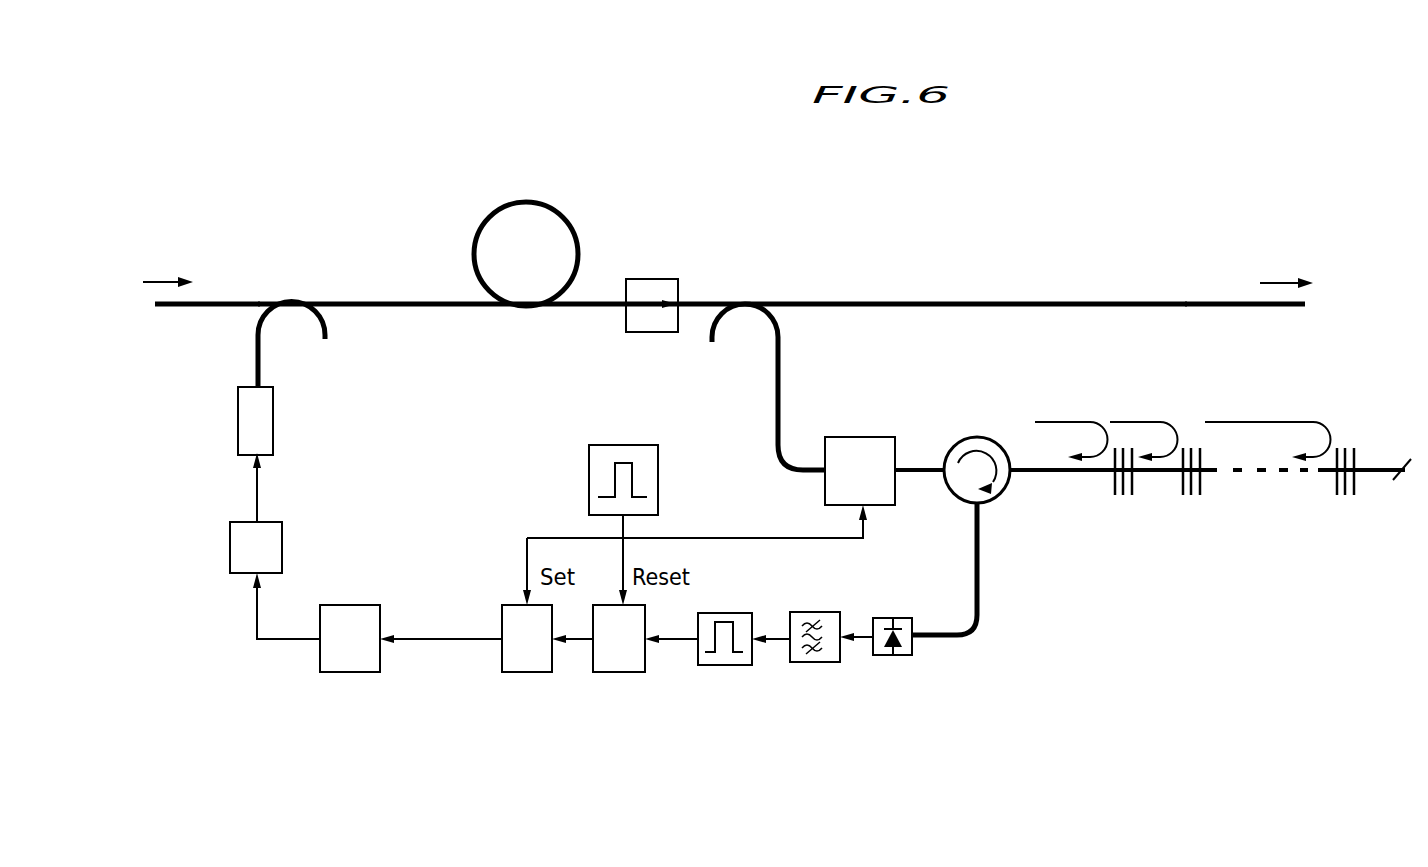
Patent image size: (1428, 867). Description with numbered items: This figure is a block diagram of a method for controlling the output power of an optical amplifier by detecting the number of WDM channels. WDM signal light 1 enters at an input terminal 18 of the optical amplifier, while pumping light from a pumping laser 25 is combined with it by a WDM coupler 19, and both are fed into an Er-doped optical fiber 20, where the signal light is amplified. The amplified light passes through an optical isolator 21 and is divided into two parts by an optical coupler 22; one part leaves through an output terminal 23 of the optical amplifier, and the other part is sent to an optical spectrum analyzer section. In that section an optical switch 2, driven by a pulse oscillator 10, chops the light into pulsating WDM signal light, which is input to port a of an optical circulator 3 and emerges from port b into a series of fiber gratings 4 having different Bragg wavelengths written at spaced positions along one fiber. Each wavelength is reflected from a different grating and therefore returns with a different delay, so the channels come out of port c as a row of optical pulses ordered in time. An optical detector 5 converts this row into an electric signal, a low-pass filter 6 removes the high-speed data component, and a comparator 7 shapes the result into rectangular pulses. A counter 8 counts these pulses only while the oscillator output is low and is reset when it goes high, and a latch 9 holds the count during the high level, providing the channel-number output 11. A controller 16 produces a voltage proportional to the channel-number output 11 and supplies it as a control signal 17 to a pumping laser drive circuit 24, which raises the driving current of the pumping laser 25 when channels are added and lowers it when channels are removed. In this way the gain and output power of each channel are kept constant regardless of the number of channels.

The WDM signal light 1 is at (1305, 244).
The optical switch 2 is at (847, 437).
The optical circulator 3 is at (1005, 500).
The fiber gratings 4 is at (1203, 483).
The optical detector 5 is at (898, 655).
The low-pass filter 6 is at (815, 665).
The comparator 7 is at (710, 665).
The counter 8 is at (607, 672).
The latch 9 is at (515, 672).
The pulse oscillator 10 is at (589, 455).
The channel-number output 11 is at (428, 636).
The controller 16 is at (337, 672).
The control signal 17 is at (257, 622).
The input terminal 18 is at (168, 310).
The WDM coupler 19 is at (293, 303).
The Er-doped optical fiber 20 is at (522, 202).
The optical isolator 21 is at (662, 279).
The optical coupler 22 is at (748, 303).
The output terminal 23 is at (1187, 303).
The pumping laser drive circuit 24 is at (230, 537).
The pumping laser 25 is at (273, 408).